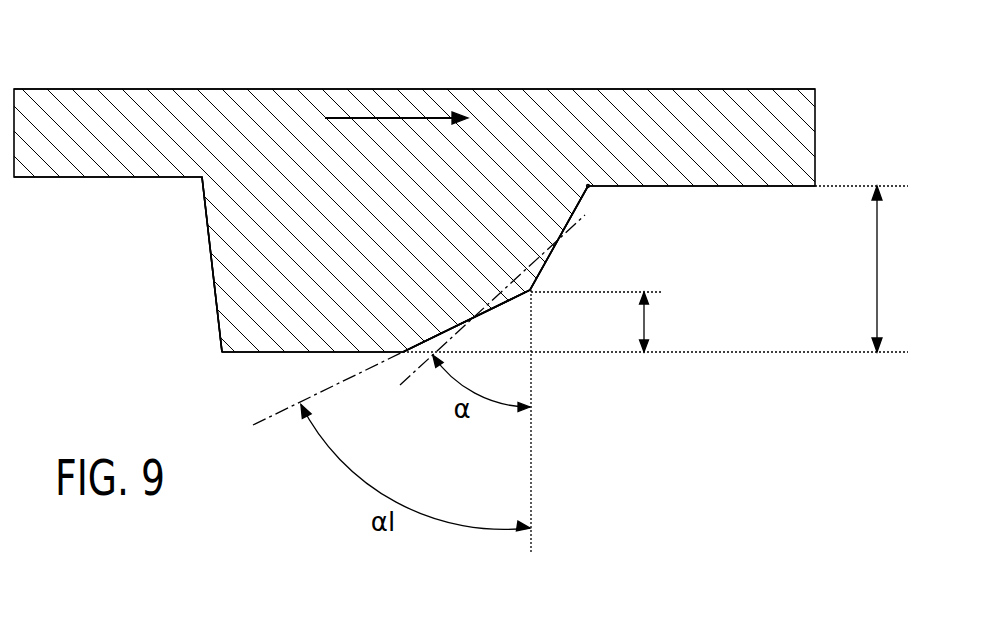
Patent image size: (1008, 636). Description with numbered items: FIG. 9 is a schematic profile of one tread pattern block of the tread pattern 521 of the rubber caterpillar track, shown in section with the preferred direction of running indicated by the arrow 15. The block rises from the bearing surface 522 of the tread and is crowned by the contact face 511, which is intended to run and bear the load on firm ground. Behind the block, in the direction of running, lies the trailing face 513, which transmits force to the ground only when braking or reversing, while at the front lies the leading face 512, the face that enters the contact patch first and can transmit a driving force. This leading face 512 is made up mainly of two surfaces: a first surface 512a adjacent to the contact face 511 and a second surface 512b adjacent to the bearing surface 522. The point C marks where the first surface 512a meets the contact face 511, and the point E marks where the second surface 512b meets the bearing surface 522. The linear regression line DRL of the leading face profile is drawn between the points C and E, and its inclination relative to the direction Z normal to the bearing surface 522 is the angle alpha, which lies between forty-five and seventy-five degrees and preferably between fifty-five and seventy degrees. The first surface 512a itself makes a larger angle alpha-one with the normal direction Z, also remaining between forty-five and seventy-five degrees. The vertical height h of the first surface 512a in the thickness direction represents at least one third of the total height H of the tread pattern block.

The arrow indicating preferred direction of running 15 is at (393, 118).
The tread pattern 521 is at (273, 178).
The bearing surface 522 is at (778, 187).
The trailing face 513 is at (213, 273).
The contact face 511 is at (273, 352).
The leading face 512 is at (678, 407).
The first surface 512a is at (498, 306).
The second surface 512b is at (543, 270).
The point where second surface meets bearing surface E is at (592, 188).
The linear regression line DRL is at (578, 225).
The point where first surface meets contact face C is at (403, 353).
The direction normal to the bearing surface Z is at (546, 426).
The height of the tread pattern block H is at (890, 269).
The vertical height of the first surface h is at (656, 322).